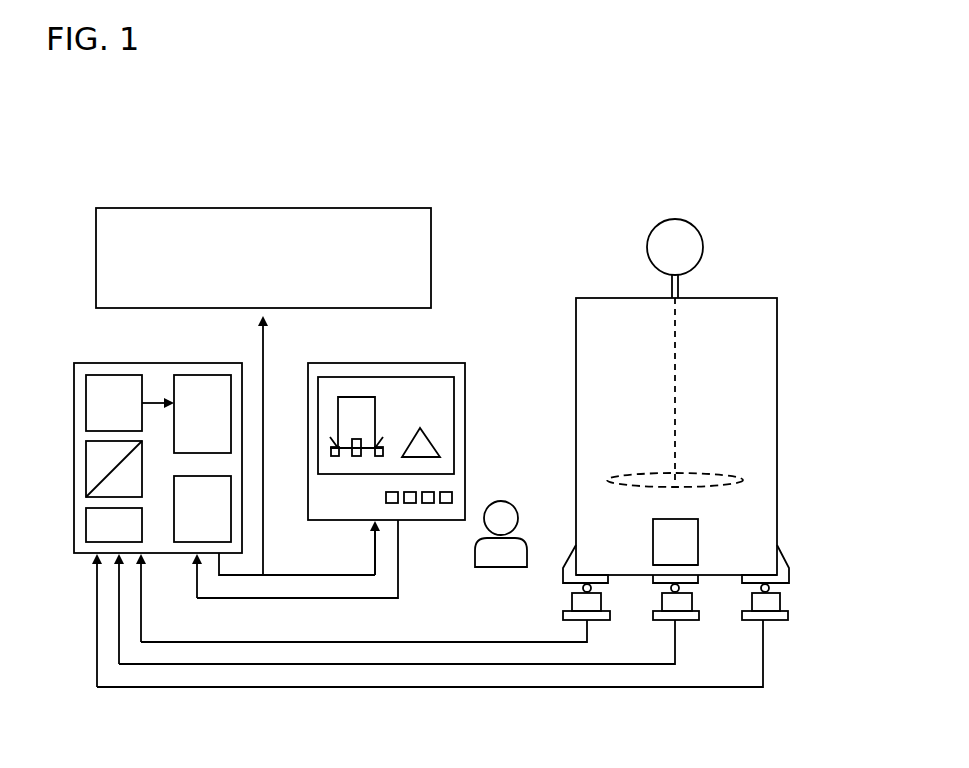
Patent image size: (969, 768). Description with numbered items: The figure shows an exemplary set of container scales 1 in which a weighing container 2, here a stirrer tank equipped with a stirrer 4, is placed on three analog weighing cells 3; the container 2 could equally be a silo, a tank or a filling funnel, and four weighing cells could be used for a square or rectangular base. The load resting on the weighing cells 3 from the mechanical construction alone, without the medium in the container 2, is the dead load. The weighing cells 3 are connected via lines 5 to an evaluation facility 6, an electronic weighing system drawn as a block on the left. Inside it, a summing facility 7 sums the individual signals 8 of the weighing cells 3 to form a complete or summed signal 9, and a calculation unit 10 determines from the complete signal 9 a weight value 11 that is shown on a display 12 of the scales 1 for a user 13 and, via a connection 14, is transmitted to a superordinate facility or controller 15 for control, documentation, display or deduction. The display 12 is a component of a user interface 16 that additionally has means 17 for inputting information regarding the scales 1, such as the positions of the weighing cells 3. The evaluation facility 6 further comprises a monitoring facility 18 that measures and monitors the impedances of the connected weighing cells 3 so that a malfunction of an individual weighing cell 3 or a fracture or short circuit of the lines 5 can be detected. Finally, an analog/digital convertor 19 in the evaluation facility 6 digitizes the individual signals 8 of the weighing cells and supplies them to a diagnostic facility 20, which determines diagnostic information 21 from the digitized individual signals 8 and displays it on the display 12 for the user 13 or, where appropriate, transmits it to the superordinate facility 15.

The container scales 1 is at (534, 234).
The weighing container 2 is at (778, 450).
The analog weighing cells 3 is at (601, 600).
The stirrer 4 is at (680, 402).
The lines 5 is at (390, 642).
The evaluation facility 6 is at (96, 363).
The summing facility 7 is at (86, 405).
The individual signals 8 is at (141, 592).
The complete signal 9 is at (155, 397).
The calculation unit 10 is at (207, 375).
The weight value 11 is at (373, 545).
The display 12 is at (455, 428).
The user 13 is at (474, 570).
The connection 14 is at (265, 345).
The superordinate facility 15 is at (431, 255).
The user interface 16 is at (466, 390).
The means for inputting information 17 is at (455, 495).
The monitoring facility 18 is at (86, 522).
The analog/digital convertor 19 is at (86, 465).
The diagnostic facility 20 is at (174, 523).
The diagnostic information 21 is at (373, 545).